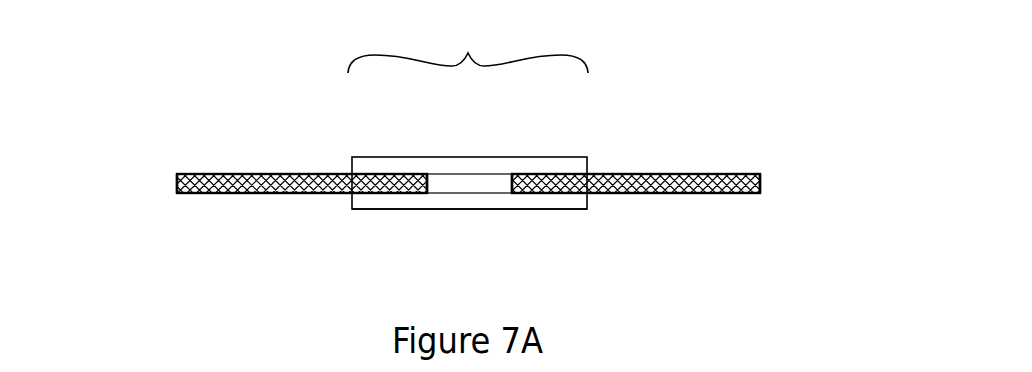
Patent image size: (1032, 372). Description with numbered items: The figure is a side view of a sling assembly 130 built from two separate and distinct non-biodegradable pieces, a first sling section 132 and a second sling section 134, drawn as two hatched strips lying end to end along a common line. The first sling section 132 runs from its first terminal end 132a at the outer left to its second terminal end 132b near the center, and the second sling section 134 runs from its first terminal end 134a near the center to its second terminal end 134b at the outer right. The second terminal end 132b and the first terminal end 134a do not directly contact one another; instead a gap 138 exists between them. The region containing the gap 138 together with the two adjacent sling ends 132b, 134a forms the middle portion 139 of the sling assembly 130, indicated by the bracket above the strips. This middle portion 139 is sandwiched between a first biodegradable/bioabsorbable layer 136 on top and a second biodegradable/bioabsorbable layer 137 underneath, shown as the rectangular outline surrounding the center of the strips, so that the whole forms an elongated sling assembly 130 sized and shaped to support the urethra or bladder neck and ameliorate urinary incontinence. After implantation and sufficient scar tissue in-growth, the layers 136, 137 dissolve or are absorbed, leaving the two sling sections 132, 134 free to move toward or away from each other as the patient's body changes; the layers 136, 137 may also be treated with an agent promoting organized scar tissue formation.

The sling assembly 130 is at (807, 78).
The first sling section 132 is at (266, 174).
The first terminal end 132a is at (168, 186).
The second terminal end 132b is at (437, 200).
The second sling section 134 is at (665, 174).
The first terminal end 134a is at (502, 200).
The second terminal end 134b is at (768, 185).
The first biodegradable/bioabsorbable layer 136 is at (362, 157).
The second biodegradable/bioabsorbable layer 137 is at (365, 209).
The gap 138 is at (470, 177).
The middle portion 139 is at (468, 48).